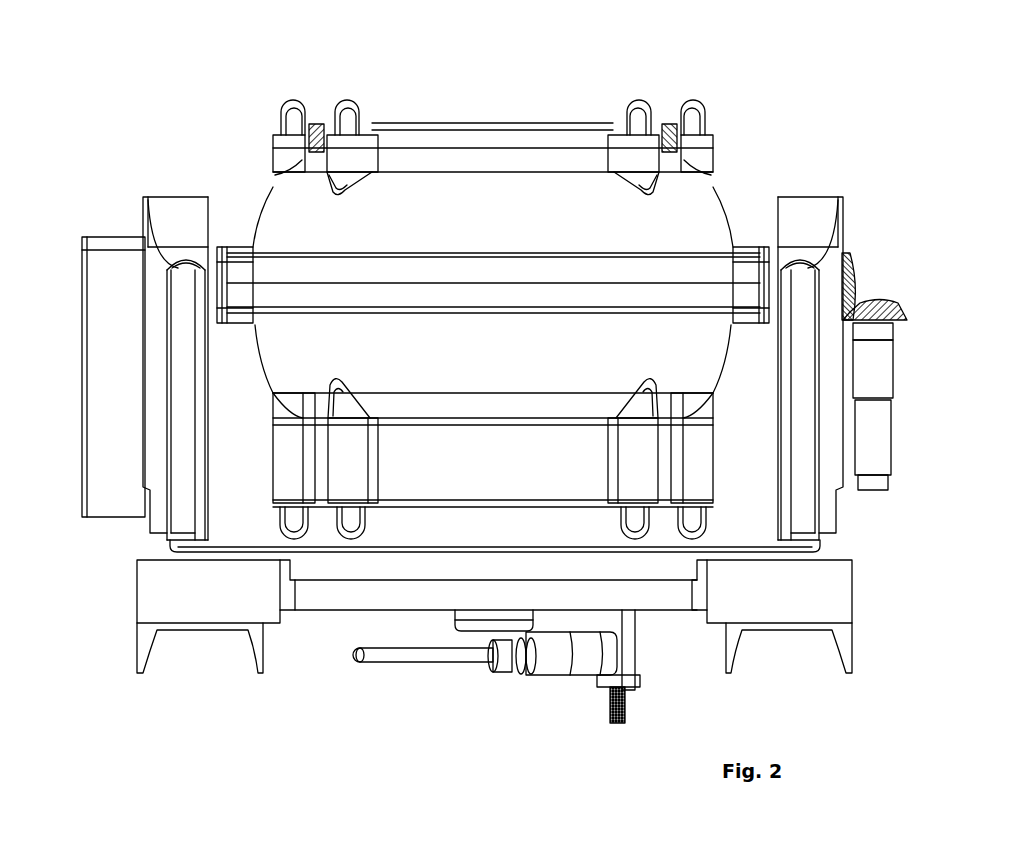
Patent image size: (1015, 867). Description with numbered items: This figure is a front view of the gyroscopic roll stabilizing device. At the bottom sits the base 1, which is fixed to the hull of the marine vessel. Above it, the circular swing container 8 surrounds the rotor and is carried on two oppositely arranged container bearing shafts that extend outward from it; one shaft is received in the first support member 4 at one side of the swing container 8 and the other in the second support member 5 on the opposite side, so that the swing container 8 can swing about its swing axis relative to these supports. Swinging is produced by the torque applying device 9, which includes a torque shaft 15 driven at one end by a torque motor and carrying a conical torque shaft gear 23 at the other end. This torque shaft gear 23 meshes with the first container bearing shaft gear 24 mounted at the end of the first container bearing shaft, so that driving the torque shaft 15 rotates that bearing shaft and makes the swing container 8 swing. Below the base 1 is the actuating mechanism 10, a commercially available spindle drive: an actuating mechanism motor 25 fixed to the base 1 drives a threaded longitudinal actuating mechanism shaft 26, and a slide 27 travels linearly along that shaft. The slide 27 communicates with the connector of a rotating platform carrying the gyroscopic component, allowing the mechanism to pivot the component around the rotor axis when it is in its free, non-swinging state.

The base 1 is at (152, 590).
The first support member 4 is at (806, 205).
The second support member 5 is at (171, 203).
The swing container 8 is at (516, 196).
The torque applying device 9 is at (922, 351).
The actuating mechanism 10 is at (487, 727).
The torque shaft 15 is at (884, 445).
The torque shaft gear 23 is at (903, 306).
The first container bearing shaft gear 24 is at (850, 252).
The actuating mechanism motor 25 is at (590, 660).
The actuating mechanism shaft 26 is at (396, 638).
The slide 27 is at (500, 655).